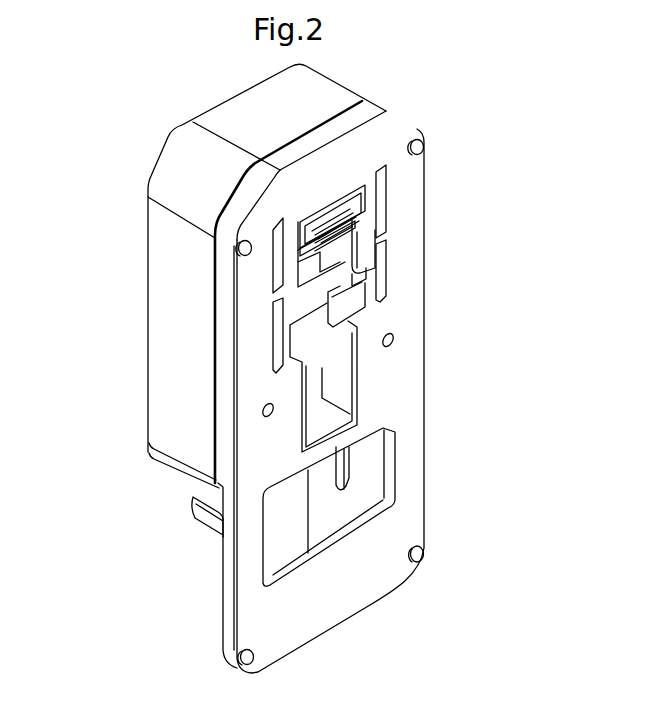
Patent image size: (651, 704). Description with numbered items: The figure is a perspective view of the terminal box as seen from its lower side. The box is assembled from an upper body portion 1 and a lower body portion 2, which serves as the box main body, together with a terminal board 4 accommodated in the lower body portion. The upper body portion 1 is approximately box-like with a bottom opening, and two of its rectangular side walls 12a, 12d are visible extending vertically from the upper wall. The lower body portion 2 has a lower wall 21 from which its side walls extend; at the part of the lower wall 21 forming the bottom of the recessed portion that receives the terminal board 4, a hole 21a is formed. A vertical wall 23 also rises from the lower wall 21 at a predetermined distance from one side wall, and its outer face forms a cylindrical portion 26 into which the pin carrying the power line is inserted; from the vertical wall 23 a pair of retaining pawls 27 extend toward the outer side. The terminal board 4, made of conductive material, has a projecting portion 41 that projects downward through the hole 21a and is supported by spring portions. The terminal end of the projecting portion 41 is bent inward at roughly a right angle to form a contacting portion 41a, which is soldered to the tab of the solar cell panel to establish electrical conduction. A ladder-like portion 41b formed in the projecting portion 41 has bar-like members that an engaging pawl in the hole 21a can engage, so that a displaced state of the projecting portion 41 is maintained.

The upper body portion 1 is at (160, 127).
The lower body portion 2 is at (389, 600).
The terminal board 4 is at (381, 238).
The side wall 12a is at (333, 105).
The side wall 12d is at (170, 432).
The lower wall 21 is at (413, 430).
The hole 21a is at (328, 275).
The vertical wall 23 is at (173, 468).
The cylindrical portion 26 is at (297, 538).
The retaining pawls 27 is at (208, 527).
The projecting portion 41 is at (367, 215).
The contacting portion 41a is at (370, 266).
The ladder-like portion 41b is at (342, 212).